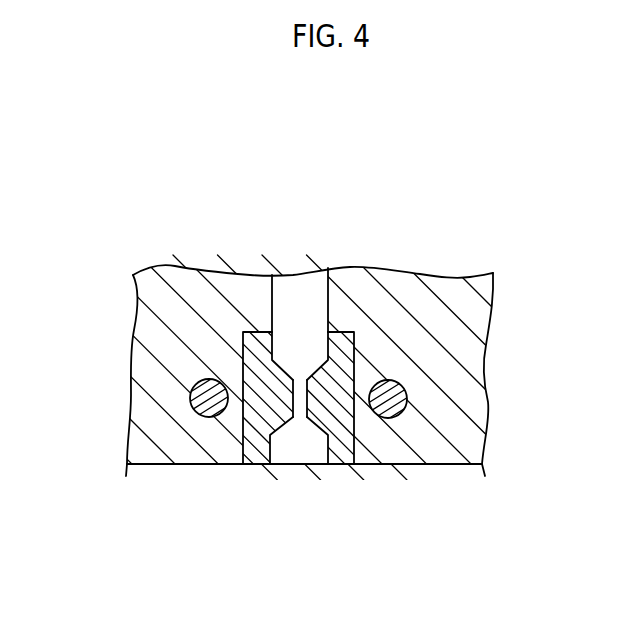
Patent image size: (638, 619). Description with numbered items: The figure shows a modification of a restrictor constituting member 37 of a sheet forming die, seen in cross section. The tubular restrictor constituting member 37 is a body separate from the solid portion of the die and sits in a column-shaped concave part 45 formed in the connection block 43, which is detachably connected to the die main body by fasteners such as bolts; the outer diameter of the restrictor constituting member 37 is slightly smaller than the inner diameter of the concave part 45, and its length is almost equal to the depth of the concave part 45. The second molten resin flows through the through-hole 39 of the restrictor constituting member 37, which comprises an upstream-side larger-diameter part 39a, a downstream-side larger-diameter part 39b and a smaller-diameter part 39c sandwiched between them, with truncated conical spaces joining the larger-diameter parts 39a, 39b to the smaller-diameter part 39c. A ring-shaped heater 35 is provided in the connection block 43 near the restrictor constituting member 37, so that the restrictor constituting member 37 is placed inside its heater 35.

The heater 35 is at (190, 398).
The restrictor constituting member 37 is at (233, 421).
The through-hole 39 is at (353, 391).
The upstream-side larger-diameter part 39a is at (300, 343).
The downstream-side larger-diameter part 39b is at (302, 456).
The smaller-diameter part 39c is at (295, 398).
The connection block 43 is at (463, 466).
The column-shaped concave part 45 is at (244, 400).